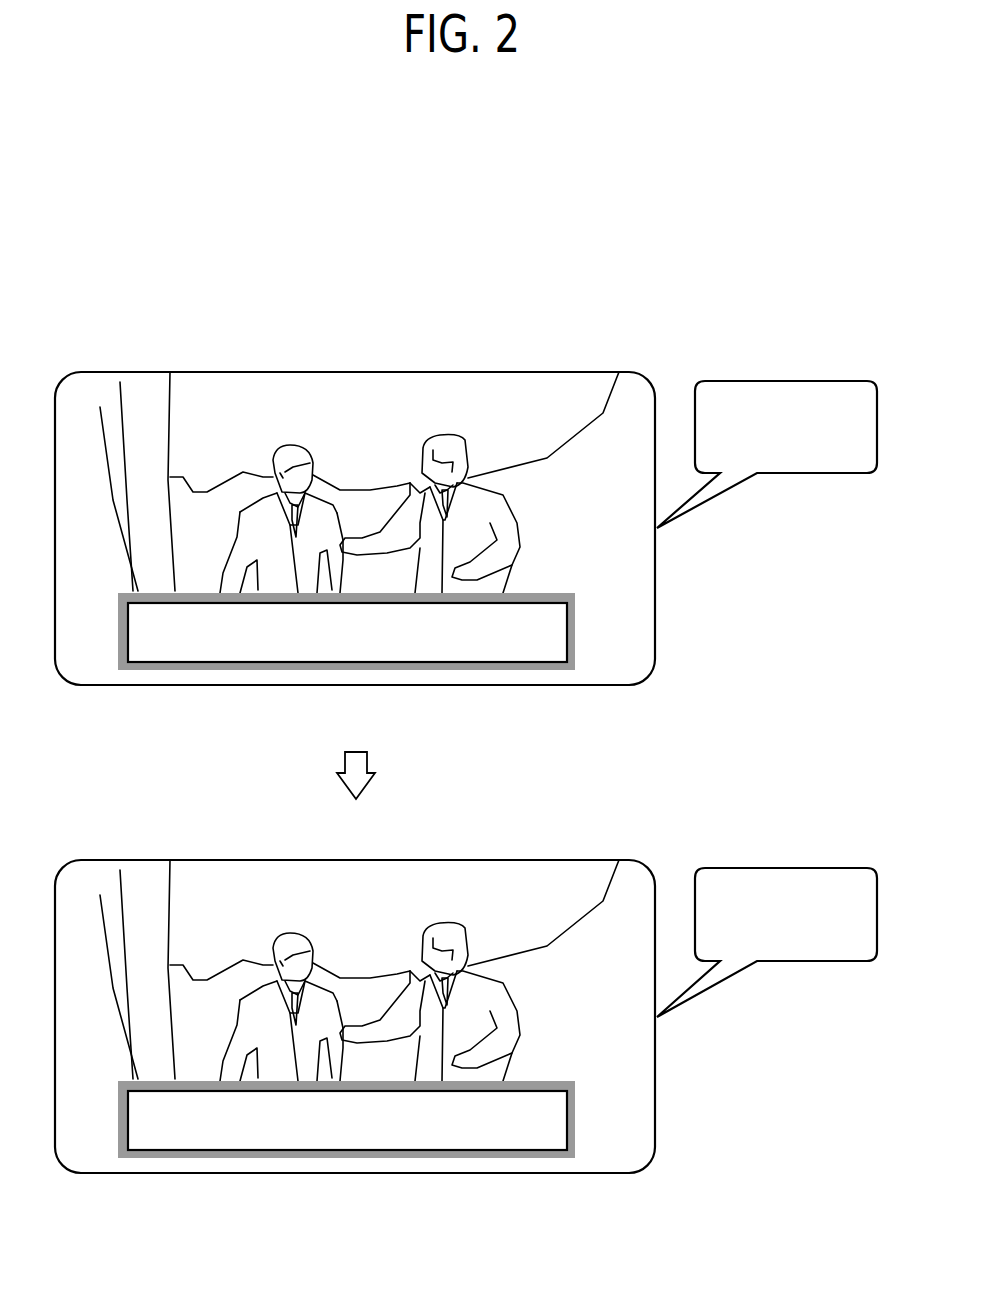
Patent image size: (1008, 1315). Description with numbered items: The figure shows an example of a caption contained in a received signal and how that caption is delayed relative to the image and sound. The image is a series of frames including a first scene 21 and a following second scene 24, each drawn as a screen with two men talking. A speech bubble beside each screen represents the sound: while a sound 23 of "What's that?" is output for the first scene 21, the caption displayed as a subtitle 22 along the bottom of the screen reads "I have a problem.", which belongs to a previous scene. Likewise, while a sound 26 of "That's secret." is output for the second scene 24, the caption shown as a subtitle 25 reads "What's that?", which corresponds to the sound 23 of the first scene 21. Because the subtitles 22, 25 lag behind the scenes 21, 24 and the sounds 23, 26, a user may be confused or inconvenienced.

The first scene 21 is at (525, 398).
The subtitle 22 is at (573, 633).
The sound 23 is at (785, 381).
The second scene 24 is at (522, 885).
The subtitle 25 is at (573, 1121).
The sound 26 is at (785, 868).